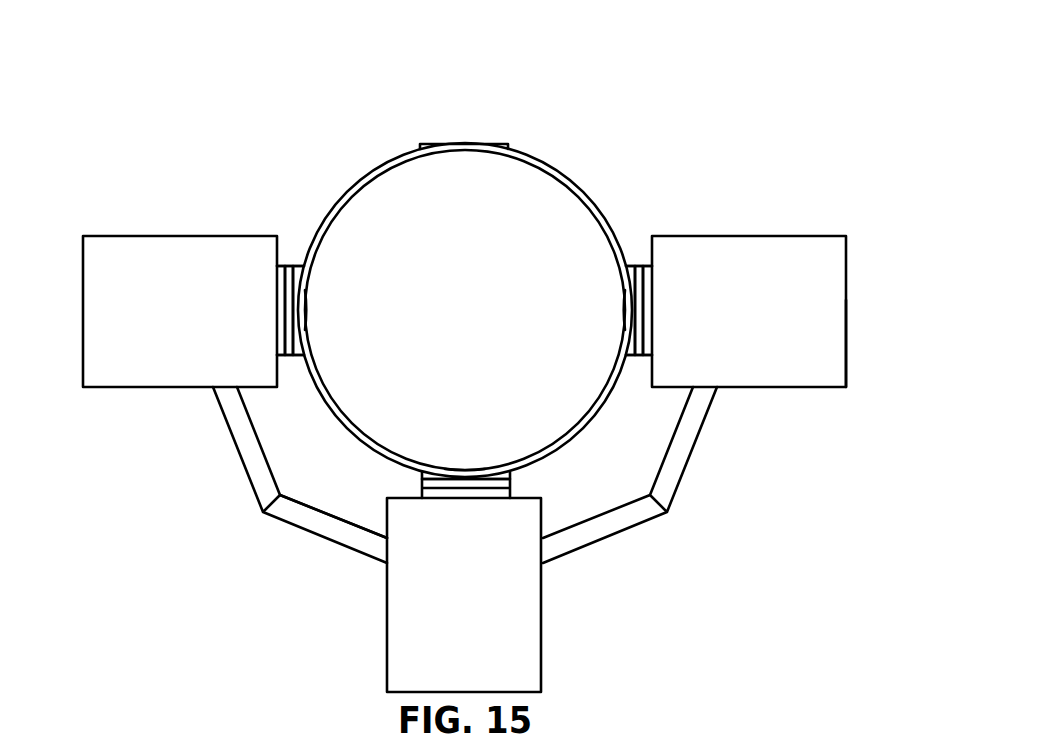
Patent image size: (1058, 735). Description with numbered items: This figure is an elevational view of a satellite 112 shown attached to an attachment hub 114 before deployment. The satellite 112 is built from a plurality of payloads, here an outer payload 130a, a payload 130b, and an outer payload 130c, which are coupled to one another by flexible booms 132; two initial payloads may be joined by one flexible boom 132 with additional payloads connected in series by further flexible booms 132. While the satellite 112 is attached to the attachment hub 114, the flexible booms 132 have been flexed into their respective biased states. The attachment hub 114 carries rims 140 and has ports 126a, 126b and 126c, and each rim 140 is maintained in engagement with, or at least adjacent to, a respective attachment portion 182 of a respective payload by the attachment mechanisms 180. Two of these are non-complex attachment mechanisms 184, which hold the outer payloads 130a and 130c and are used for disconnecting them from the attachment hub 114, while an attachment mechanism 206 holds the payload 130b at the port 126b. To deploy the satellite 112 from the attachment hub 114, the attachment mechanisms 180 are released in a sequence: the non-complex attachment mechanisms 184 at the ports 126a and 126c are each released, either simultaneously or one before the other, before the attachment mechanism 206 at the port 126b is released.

The satellite 112 is at (862, 356).
The attachment hub 114 is at (566, 174).
The port 126a is at (600, 308).
The port 126b is at (465, 447).
The port 126c is at (324, 312).
The outer payload 130a is at (846, 312).
The payload 130b is at (541, 630).
The outer payload 130c is at (83, 311).
The flexible boom 132 is at (249, 477).
The rim 140 is at (500, 144).
The attachment mechanism 180 is at (286, 357).
The attachment portion 182 is at (283, 266).
The non-complex attachment mechanism 184 is at (296, 266).
The attachment mechanism 206 is at (376, 530).